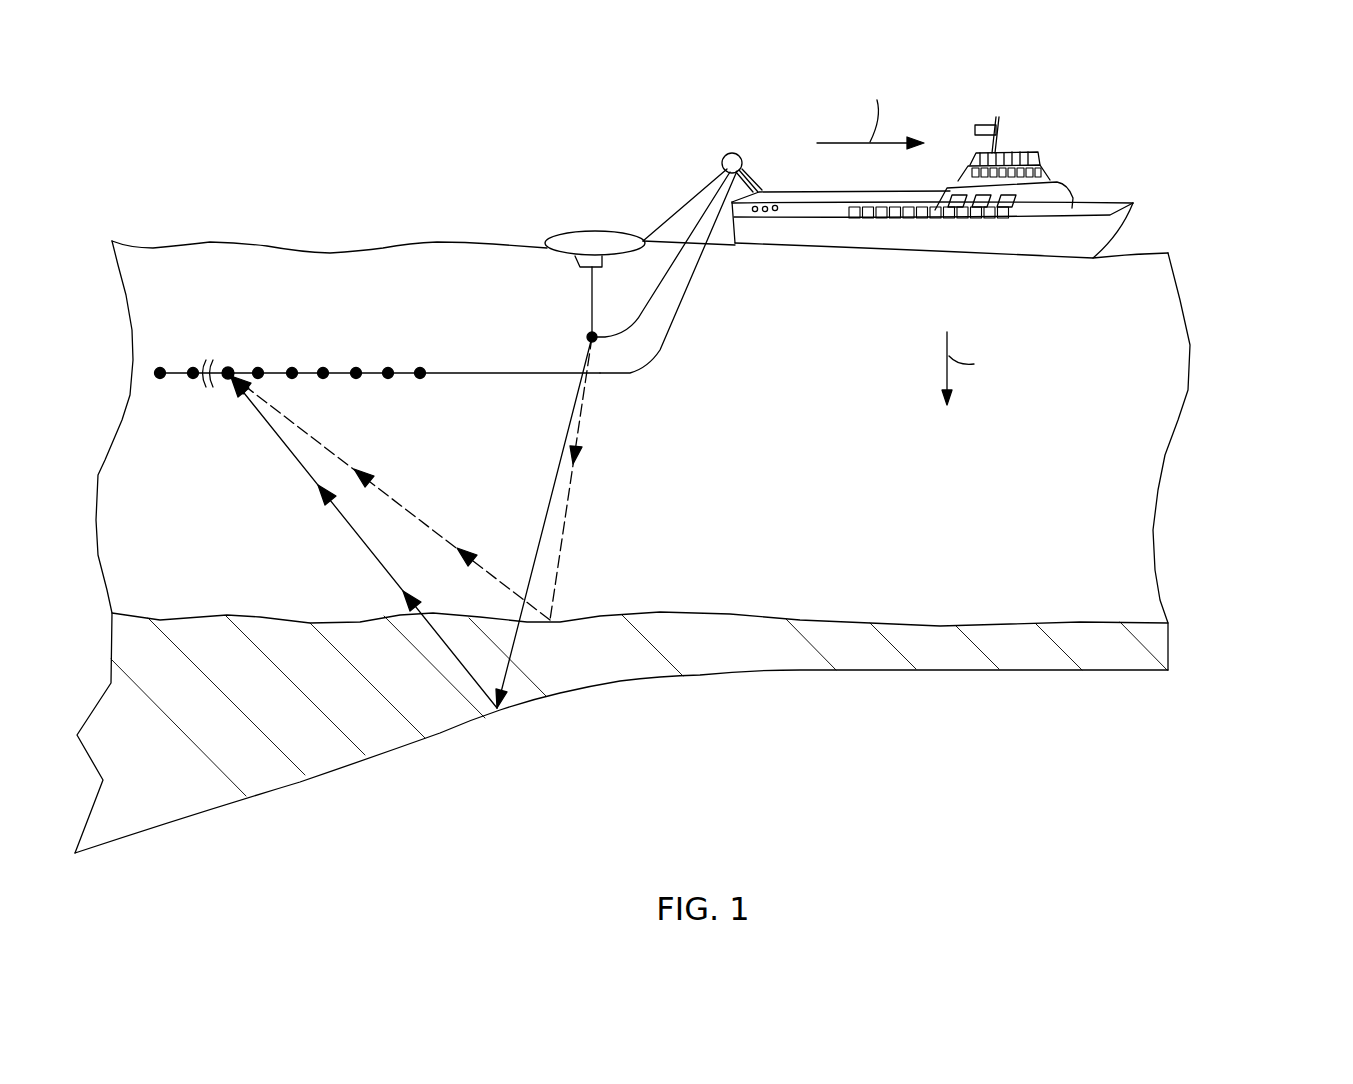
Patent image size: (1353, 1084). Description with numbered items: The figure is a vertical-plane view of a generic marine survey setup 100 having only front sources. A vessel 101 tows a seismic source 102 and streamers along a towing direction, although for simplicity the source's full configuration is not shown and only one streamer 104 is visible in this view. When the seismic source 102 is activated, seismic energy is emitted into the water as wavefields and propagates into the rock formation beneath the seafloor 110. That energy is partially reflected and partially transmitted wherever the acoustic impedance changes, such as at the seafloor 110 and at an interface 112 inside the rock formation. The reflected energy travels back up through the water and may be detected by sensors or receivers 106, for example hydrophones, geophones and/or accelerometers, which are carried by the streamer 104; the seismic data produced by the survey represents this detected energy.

The marine survey setup 100 is at (1220, 106).
The vessel 101 is at (1103, 196).
The seismic source 102 is at (587, 337).
The streamer 104 is at (177, 377).
The receivers 106 is at (229, 367).
The seafloor 110 is at (885, 619).
The interface 112 is at (956, 668).